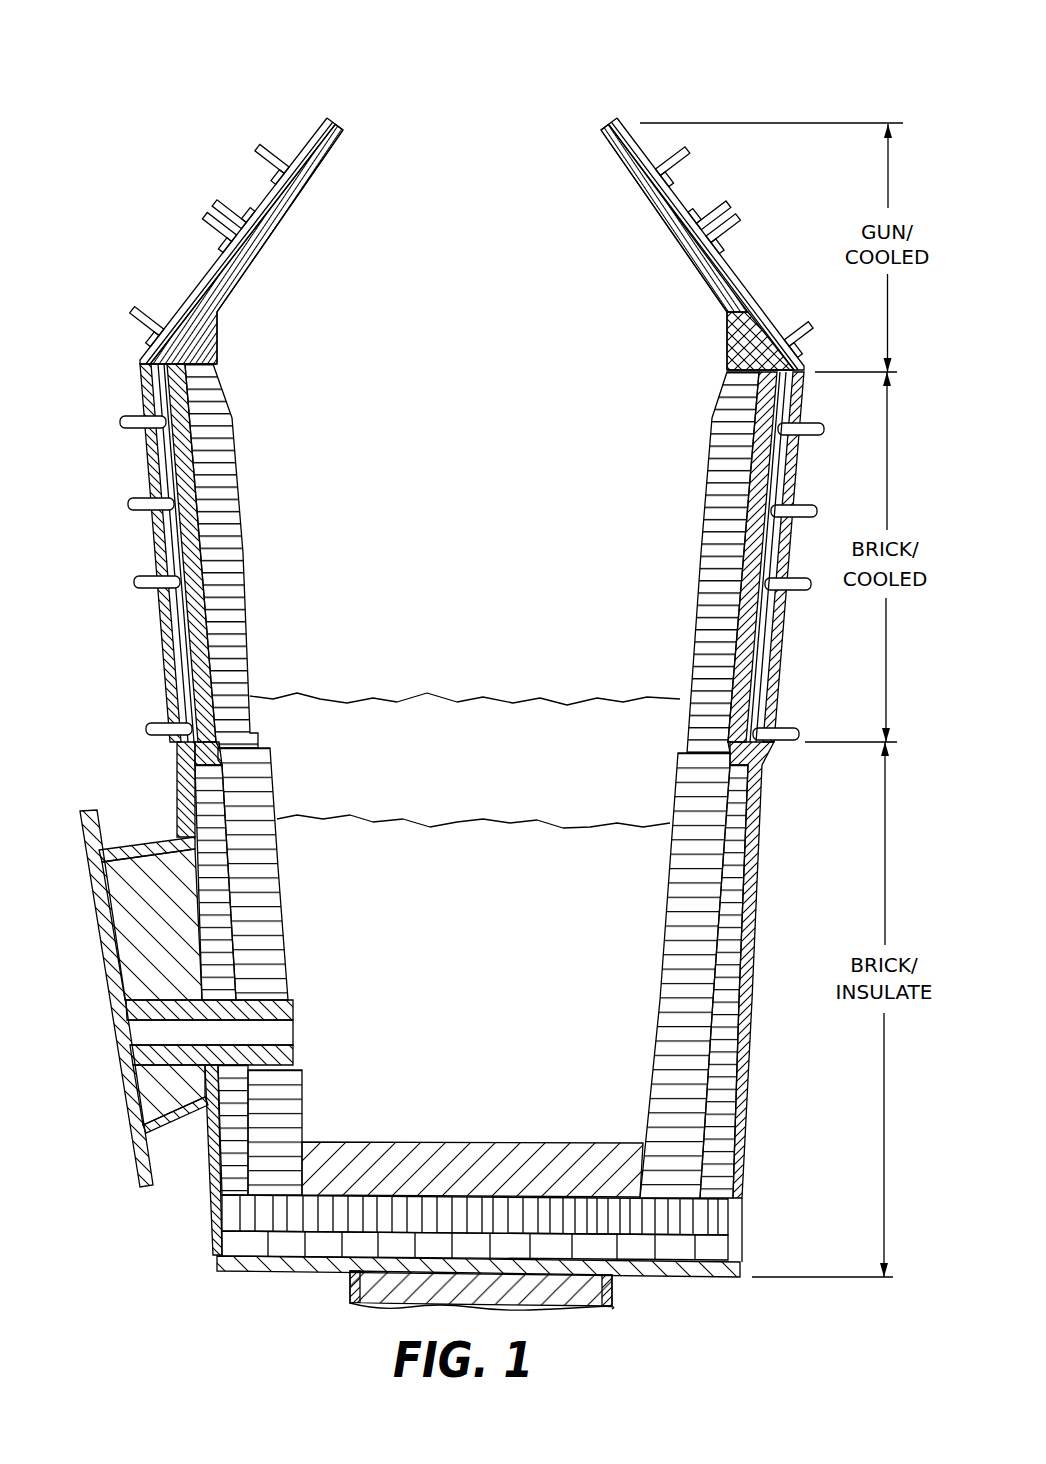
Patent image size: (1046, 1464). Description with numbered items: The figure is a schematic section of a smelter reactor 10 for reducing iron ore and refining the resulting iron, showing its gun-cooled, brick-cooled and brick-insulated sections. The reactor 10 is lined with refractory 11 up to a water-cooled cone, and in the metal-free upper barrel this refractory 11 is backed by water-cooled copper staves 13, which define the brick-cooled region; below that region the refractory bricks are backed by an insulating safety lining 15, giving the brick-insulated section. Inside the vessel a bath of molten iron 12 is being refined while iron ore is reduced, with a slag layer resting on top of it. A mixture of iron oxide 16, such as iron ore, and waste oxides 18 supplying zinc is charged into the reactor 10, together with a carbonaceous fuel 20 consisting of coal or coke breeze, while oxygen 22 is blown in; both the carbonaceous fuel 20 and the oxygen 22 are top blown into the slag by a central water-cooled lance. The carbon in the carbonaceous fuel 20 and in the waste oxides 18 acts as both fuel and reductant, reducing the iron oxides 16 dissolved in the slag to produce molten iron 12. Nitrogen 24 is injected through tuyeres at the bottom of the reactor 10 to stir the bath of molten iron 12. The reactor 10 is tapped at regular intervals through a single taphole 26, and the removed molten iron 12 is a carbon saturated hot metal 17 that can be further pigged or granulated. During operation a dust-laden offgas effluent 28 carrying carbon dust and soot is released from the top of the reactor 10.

The smelter reactor 10 is at (713, 1300).
The refractory 11 is at (722, 1132).
The bath of molten iron 12 is at (478, 886).
The water-cooled copper staves 13 is at (762, 656).
The insulating safety lining 15 is at (690, 1057).
The iron oxide 16 is at (573, 230).
The carbon saturated hot metal 17 is at (137, 1037).
The waste oxides 18 is at (363, 240).
The carbonaceous fuel 20 is at (543, 187).
The oxygen 22 is at (383, 240).
The nitrogen 24 is at (324, 1108).
The taphole 26 is at (100, 1037).
The dust-laden offgas effluent 28 is at (470, 248).